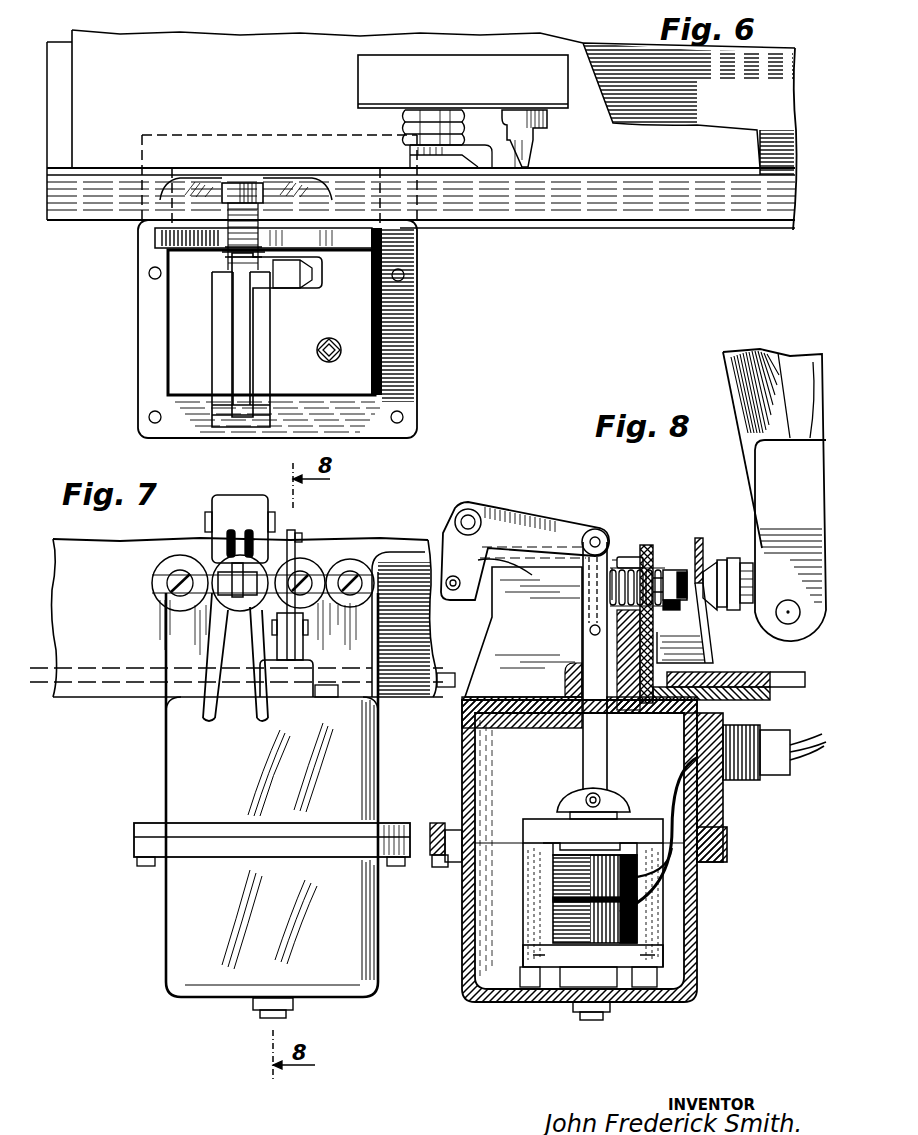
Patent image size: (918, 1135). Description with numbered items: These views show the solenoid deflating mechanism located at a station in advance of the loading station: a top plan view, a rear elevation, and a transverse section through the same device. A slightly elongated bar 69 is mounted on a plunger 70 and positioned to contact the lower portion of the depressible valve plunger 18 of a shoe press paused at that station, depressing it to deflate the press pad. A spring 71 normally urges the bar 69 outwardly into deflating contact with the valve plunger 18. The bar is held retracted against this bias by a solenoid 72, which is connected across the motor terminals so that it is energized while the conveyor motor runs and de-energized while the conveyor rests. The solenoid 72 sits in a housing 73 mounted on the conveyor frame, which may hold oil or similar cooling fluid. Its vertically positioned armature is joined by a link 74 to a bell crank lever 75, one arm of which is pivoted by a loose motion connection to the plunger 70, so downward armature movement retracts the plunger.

In FIG. 6, the depressible plunger 18 is at (533, 165).
In FIG. 8, the depressible plunger 18 is at (700, 595).
In FIG. 6, the bar 69 is at (248, 183).
In FIG. 8, the bar 69 is at (676, 572).
In FIG. 6, the plunger 70 is at (225, 250).
In FIG. 8, the plunger 70 is at (632, 570).
In FIG. 6, the spring 71 is at (228, 258).
In FIG. 8, the spring 71 is at (607, 568).
In FIG. 8, the solenoid 72 is at (633, 928).
In FIG. 7, the housing 73 is at (272, 805).
In FIG. 8, the housing 73 is at (697, 890).
In FIG. 7, the link 74 is at (298, 650).
In FIG. 8, the link 74 is at (608, 752).
In FIG. 6, the bell crank lever 75 is at (240, 348).
In FIG. 7, the bell crank lever 75 is at (235, 515).
In FIG. 8, the bell crank lever 75 is at (530, 520).